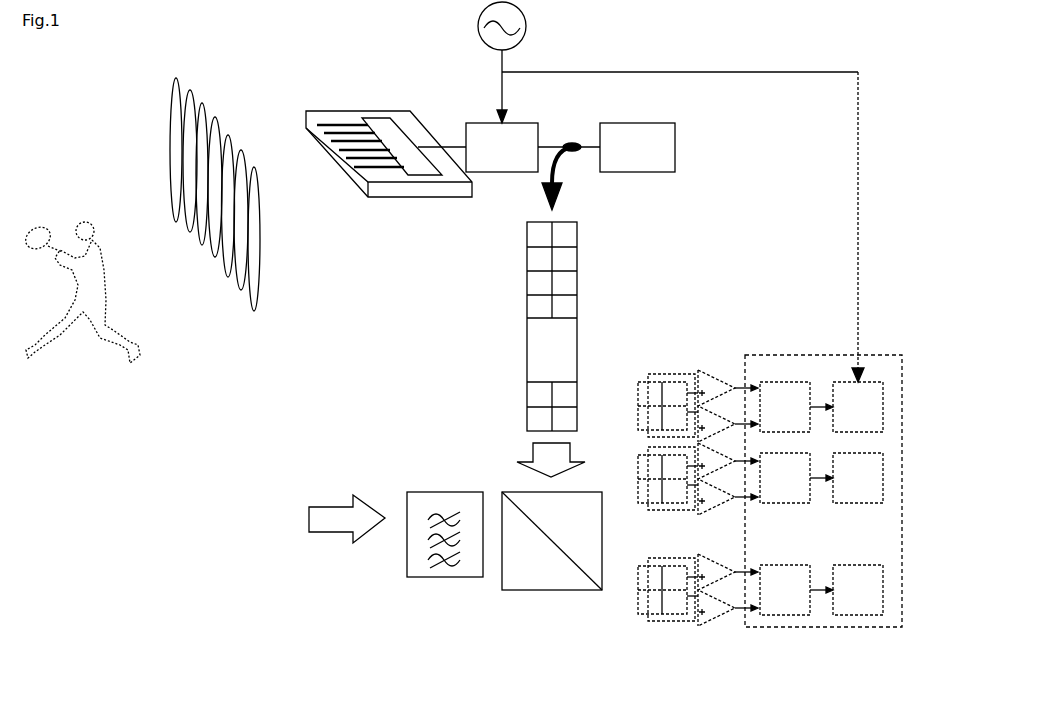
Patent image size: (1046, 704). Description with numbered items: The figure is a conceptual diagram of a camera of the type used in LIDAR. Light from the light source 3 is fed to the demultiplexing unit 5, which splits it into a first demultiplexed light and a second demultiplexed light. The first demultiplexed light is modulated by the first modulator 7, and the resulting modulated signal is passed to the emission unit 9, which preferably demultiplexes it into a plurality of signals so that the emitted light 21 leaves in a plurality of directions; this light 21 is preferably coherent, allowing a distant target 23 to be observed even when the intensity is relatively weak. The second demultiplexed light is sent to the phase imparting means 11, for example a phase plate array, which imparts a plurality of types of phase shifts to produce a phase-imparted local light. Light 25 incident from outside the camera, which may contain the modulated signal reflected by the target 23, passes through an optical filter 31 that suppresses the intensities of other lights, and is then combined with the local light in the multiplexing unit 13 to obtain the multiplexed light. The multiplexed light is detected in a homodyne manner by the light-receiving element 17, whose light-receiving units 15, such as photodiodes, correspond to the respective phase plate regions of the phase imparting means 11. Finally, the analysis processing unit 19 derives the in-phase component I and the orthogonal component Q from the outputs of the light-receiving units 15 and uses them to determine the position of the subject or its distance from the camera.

The light source 3 is at (678, 150).
The demultiplexing unit 5 is at (573, 143).
The first modulator 7 is at (533, 112).
The emission unit 9 is at (385, 111).
The phase imparting means 11 is at (578, 258).
The multiplexing unit 13 is at (597, 490).
The light-receiving unit 15 is at (638, 380).
The light-receiving element 17 is at (712, 372).
The analysis processing unit 19 is at (885, 352).
The light 21 is at (225, 139).
The target 23 is at (88, 213).
The light incident from the outside of the camera 25 is at (340, 507).
The optical filter 31 is at (448, 498).